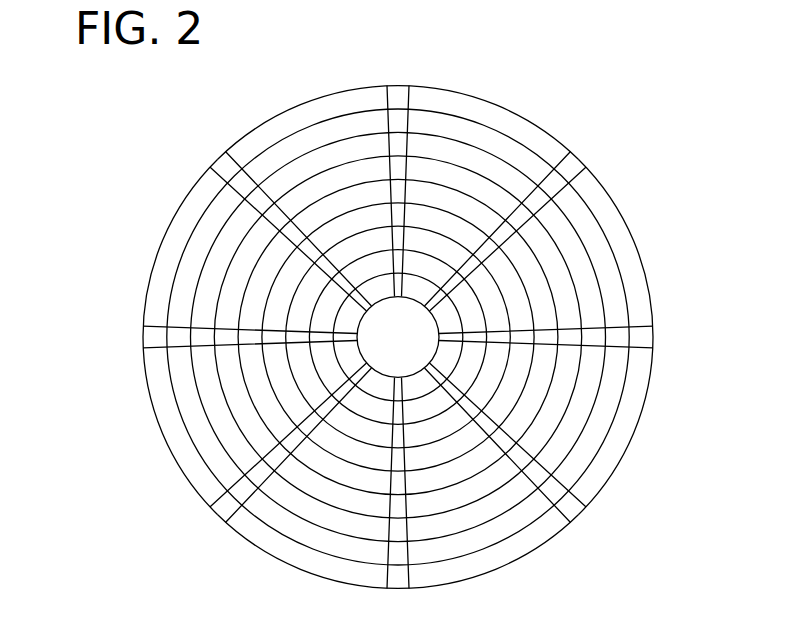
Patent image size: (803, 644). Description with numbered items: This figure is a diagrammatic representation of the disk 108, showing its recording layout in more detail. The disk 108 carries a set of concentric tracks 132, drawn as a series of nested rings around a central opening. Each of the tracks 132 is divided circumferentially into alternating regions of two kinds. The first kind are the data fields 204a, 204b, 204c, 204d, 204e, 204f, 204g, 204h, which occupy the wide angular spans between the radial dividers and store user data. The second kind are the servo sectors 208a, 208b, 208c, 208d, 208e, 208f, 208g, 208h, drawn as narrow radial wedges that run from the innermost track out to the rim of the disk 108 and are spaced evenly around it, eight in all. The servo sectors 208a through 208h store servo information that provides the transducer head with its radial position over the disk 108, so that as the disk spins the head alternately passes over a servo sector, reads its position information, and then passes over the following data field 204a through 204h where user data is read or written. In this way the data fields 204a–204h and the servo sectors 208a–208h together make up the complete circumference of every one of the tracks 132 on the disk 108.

The disk 108 is at (355, 85).
The tracks 132 is at (500, 130).
The data field 204a is at (460, 90).
The data field 204b is at (628, 222).
The data field 204c is at (640, 415).
The data field 204d is at (510, 565).
The data field 204e is at (300, 570).
The data field 204f is at (157, 423).
The data field 204g is at (150, 272).
The data field 204h is at (302, 103).
The servo sector 208a is at (400, 85).
The servo sector 208b is at (580, 162).
The servo sector 208c is at (653, 335).
The servo sector 208d is at (578, 513).
The servo sector 208e is at (397, 590).
The servo sector 208f is at (215, 515).
The servo sector 208g is at (140, 340).
The servo sector 208h is at (220, 168).